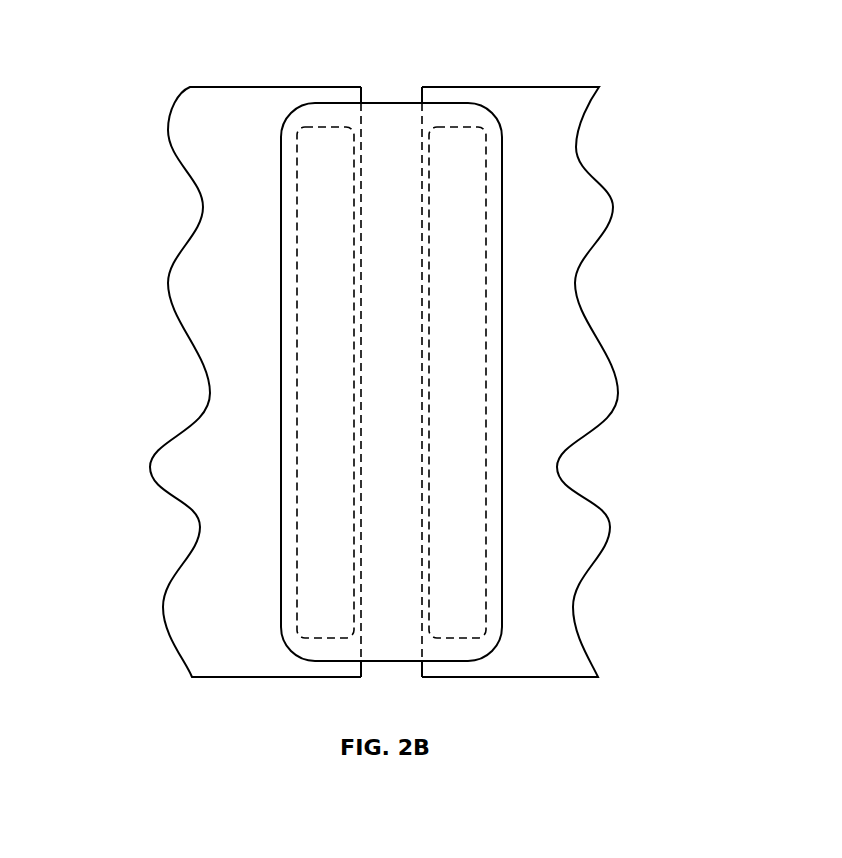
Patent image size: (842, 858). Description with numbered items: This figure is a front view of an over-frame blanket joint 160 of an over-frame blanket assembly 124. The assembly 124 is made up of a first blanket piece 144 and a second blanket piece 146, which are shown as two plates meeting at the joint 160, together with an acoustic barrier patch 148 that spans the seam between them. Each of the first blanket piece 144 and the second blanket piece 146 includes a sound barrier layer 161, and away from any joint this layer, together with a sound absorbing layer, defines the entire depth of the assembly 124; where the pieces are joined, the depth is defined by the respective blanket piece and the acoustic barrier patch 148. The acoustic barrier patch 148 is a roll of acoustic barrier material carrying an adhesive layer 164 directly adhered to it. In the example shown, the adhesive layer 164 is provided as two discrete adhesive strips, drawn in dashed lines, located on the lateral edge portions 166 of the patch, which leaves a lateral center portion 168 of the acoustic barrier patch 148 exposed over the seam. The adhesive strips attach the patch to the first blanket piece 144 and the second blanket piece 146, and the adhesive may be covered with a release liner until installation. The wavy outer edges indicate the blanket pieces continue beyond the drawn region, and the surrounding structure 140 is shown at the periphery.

The over-frame blanket assembly 124 is at (128, 56).
The housing 140 is at (566, 290).
The first blanket piece 144 is at (253, 87).
The second blanket piece 146 is at (522, 87).
The acoustic barrier patch 148 is at (392, 102).
The over-frame blanket joint 160 is at (375, 58).
The sound barrier layer 161 is at (180, 144).
The adhesive layer 164 is at (300, 237).
The lateral edge portions 166 is at (281, 487).
The lateral center portion 168 is at (410, 563).